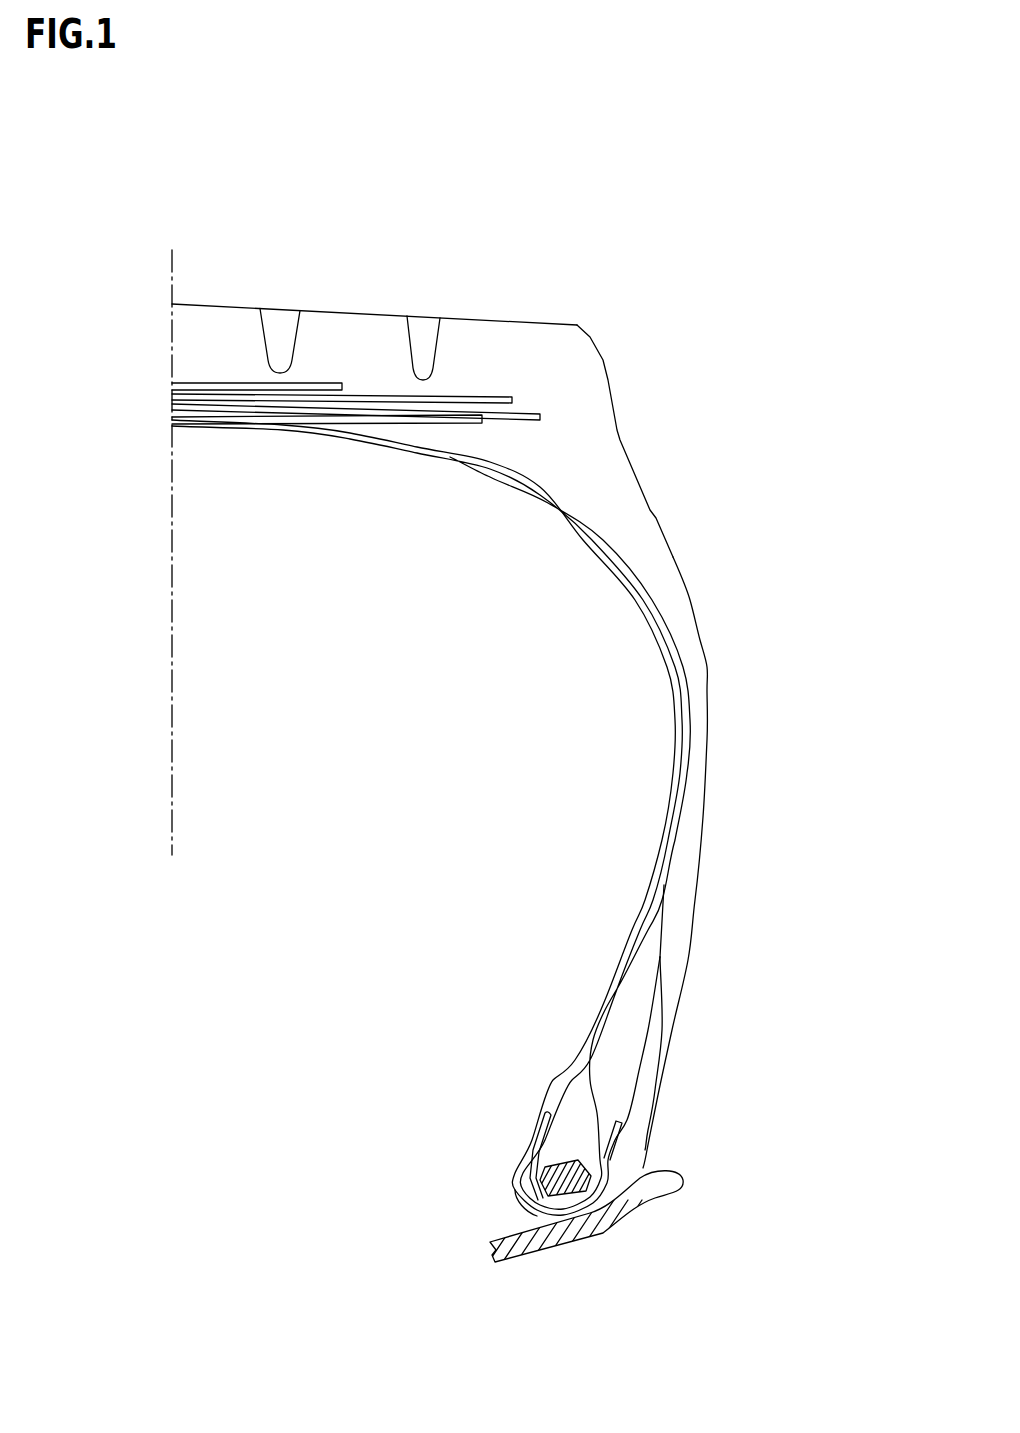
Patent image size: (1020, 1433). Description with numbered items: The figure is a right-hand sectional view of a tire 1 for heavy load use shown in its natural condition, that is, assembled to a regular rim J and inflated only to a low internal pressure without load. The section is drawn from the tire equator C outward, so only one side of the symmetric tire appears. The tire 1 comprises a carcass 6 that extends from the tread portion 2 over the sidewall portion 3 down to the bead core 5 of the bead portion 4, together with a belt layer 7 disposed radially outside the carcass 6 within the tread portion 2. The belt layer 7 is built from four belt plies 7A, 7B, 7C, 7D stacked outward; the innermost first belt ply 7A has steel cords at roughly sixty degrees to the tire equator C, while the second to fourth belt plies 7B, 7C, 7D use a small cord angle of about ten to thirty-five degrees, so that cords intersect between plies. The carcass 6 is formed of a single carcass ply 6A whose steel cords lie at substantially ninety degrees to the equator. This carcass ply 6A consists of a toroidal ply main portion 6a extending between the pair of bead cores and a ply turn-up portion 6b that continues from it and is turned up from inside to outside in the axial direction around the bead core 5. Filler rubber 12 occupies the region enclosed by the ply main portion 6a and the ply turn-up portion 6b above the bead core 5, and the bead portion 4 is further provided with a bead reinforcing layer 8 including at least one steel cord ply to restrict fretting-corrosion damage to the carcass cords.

The tire for heavy load use 1 is at (500, 656).
The tread portion 2 is at (352, 286).
The sidewall portion 3 is at (726, 752).
The bead portion 4 is at (672, 1135).
The bead core 5 is at (545, 1190).
The carcass 6 is at (431, 817).
The carcass ply 6A is at (431, 817).
The ply main portion 6a is at (623, 985).
The ply turn-up portion 6b is at (580, 1116).
The belt layer 7 is at (297, 411).
The first belt ply 7A is at (286, 443).
The second belt ply 7B is at (172, 405).
The third belt ply 7C is at (172, 400).
The fourth belt ply 7D is at (172, 385).
The bead reinforcing layer 8 is at (539, 1224).
The filler rubber 12 is at (551, 1149).
The regular rim J is at (595, 1232).
The tire equator C is at (172, 537).